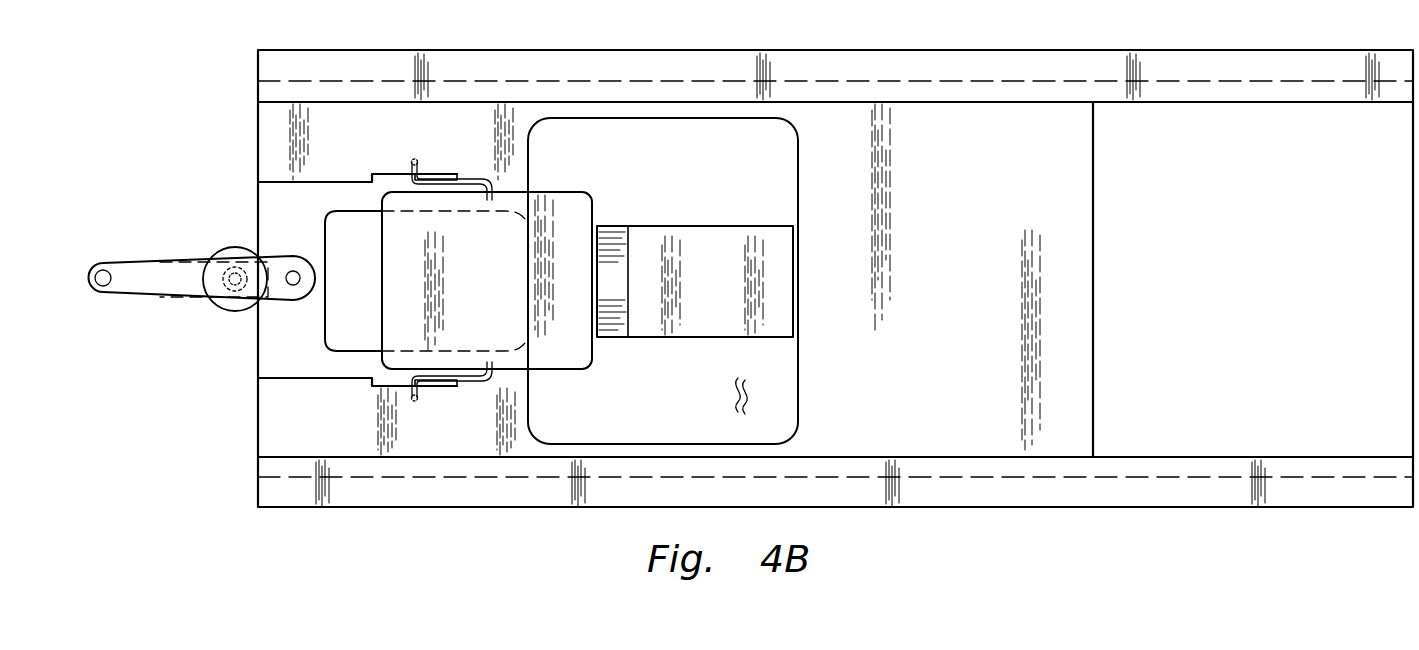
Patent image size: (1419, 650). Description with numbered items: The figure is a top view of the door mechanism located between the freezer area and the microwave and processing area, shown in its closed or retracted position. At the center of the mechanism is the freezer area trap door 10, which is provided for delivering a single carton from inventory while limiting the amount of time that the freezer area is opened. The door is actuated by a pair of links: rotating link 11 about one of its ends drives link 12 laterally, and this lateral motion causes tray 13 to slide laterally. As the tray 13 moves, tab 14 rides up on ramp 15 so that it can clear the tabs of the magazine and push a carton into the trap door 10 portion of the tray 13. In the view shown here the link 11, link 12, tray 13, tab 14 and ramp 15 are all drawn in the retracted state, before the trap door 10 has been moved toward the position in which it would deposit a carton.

The trap door 10 is at (743, 393).
The link 11 is at (177, 298).
The link 12 is at (130, 262).
The tray 13 is at (1095, 217).
The tab 14 is at (557, 200).
The ramp 15 is at (713, 225).